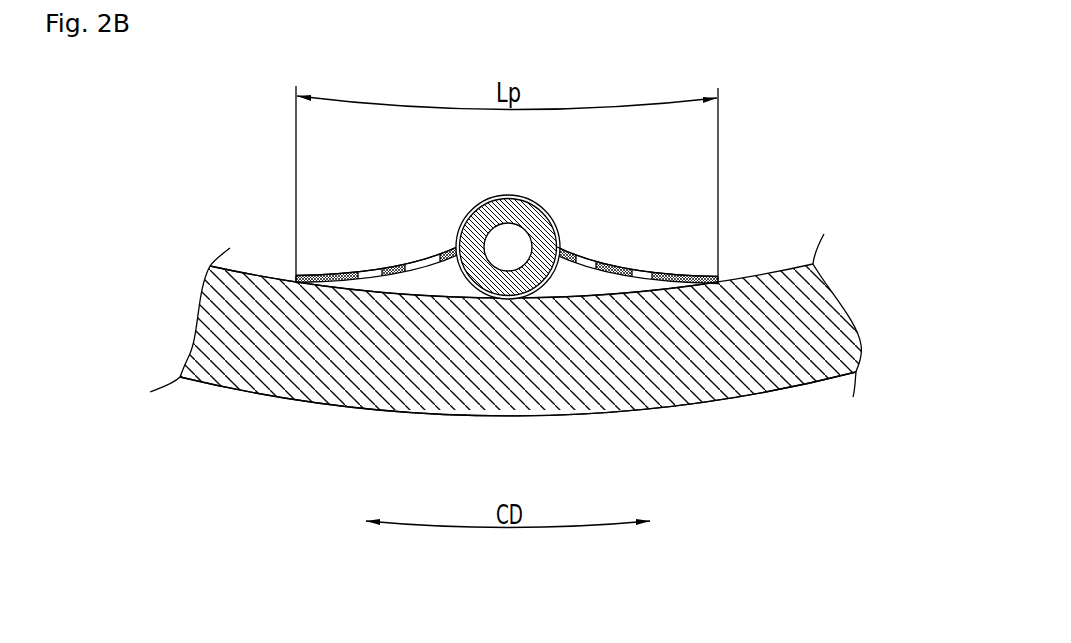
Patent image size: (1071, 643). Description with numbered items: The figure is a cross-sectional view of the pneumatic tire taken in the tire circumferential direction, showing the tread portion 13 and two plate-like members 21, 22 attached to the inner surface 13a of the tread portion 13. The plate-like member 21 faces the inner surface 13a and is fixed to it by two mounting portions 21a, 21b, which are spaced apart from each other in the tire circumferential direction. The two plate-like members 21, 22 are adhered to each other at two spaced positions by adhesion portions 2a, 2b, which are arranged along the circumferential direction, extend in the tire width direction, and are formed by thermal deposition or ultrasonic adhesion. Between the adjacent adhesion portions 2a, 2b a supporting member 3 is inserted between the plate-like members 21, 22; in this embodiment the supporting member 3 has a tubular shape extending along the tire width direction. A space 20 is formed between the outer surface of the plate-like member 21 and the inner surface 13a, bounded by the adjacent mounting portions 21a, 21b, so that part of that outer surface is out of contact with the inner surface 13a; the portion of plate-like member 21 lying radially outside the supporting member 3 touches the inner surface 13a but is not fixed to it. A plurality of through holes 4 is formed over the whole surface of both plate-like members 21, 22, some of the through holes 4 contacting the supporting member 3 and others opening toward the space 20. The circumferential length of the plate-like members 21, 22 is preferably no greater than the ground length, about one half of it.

The adhesion portion 2a is at (452, 250).
The adhesion portion 2b is at (564, 250).
The supporting member 3 is at (467, 222).
The through holes 4 is at (505, 195).
The tread portion 13 is at (786, 417).
The inner surface of the tread portion 13a is at (258, 265).
The space 20 is at (578, 284).
The plate-like member 21 is at (404, 272).
The mounting portion 21a is at (296, 284).
The mounting portion 21b is at (719, 283).
The plate-like member 22 is at (399, 264).